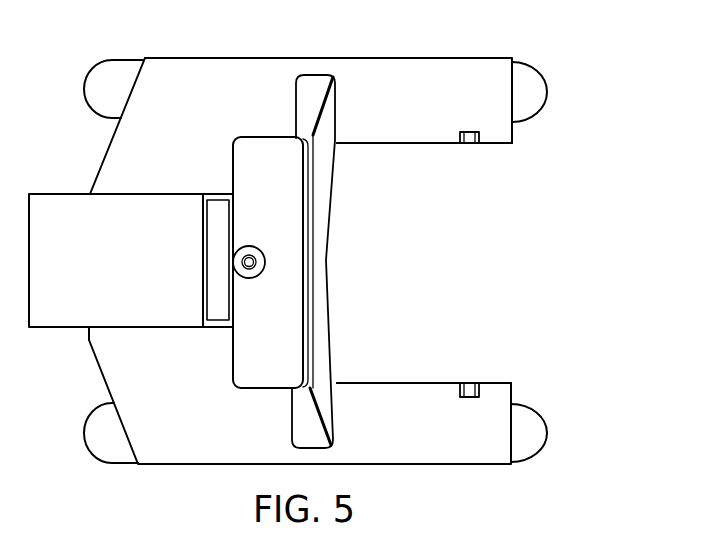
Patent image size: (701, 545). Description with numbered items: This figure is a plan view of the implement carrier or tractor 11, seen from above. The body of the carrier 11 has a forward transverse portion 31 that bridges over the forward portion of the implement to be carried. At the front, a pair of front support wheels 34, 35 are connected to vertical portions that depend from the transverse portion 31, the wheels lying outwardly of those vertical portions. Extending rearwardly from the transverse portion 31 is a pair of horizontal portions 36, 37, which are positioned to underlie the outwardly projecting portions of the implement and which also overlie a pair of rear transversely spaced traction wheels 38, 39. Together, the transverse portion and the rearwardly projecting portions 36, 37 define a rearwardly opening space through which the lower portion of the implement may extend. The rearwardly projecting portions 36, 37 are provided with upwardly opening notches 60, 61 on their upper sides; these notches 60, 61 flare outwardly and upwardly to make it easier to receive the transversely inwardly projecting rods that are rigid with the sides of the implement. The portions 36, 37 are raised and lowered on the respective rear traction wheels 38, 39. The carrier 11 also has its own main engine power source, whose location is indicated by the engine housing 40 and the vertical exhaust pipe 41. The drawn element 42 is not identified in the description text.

The implement carrier 11 is at (318, 49).
The forward transverse portion 31 is at (115, 158).
The front support wheel 34 is at (96, 440).
The front support wheel 35 is at (100, 70).
The horizontal portion 36 is at (373, 391).
The horizontal portion 37 is at (404, 123).
The rear traction wheel 38 is at (535, 421).
The rear traction wheel 39 is at (532, 90).
The engine housing 40 is at (268, 148).
The vertical exhaust pipe 41 is at (252, 272).
The housing block 42 is at (55, 326).
The upwardly opening notch 60 is at (470, 388).
The upwardly opening notch 61 is at (474, 143).